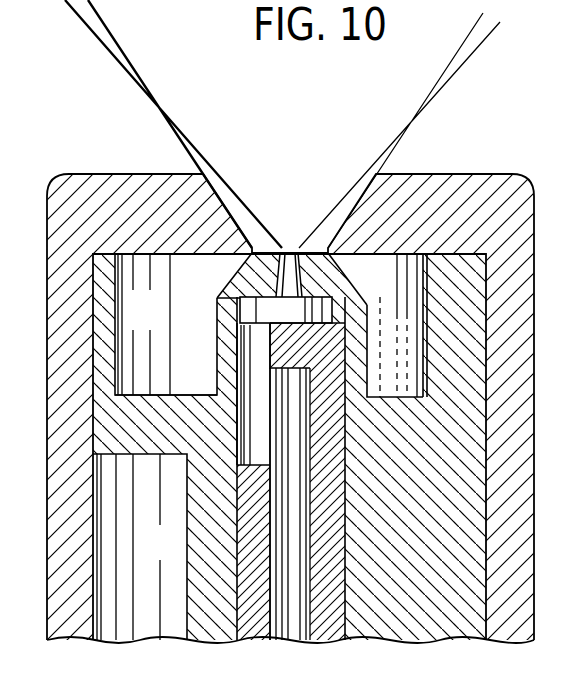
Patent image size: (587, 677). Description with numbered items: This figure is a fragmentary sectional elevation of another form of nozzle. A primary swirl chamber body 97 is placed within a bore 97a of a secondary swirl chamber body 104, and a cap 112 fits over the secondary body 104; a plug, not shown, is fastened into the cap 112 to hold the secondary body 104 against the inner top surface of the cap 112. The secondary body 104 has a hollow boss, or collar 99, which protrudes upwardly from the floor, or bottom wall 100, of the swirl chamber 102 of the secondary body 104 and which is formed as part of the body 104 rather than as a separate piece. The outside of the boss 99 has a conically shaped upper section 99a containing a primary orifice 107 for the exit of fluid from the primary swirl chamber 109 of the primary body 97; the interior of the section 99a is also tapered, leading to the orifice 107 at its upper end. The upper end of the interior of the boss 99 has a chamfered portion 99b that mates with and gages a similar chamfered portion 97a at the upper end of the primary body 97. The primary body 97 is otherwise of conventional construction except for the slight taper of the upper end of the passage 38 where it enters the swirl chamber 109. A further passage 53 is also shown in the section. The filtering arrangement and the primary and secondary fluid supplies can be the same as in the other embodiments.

The secondary swirl chamber body 104 is at (432, 620).
The cap 112 is at (472, 176).
The primary orifice 107 is at (279, 252).
The primary swirl chamber 109 is at (260, 312).
The conically shaped upper section 99a is at (335, 277).
The boss 99 is at (357, 368).
The chamfered portion 99b is at (331, 338).
The bore 97a is at (367, 308).
The primary swirl chamber body 97 is at (328, 623).
The passage 38 is at (247, 351).
The swirl chamber 102 is at (162, 319).
The bottom wall 100 is at (155, 394).
The passage 53 is at (163, 557).